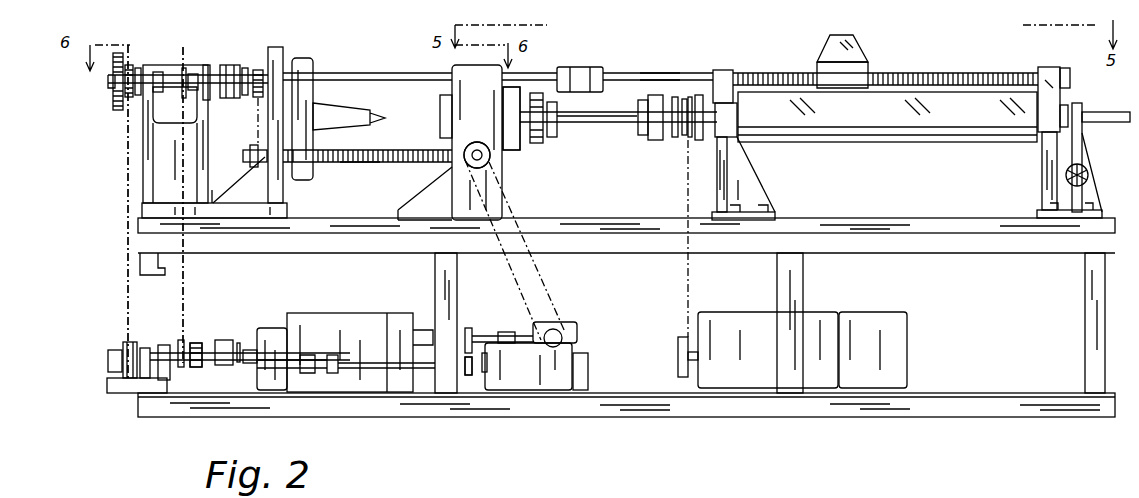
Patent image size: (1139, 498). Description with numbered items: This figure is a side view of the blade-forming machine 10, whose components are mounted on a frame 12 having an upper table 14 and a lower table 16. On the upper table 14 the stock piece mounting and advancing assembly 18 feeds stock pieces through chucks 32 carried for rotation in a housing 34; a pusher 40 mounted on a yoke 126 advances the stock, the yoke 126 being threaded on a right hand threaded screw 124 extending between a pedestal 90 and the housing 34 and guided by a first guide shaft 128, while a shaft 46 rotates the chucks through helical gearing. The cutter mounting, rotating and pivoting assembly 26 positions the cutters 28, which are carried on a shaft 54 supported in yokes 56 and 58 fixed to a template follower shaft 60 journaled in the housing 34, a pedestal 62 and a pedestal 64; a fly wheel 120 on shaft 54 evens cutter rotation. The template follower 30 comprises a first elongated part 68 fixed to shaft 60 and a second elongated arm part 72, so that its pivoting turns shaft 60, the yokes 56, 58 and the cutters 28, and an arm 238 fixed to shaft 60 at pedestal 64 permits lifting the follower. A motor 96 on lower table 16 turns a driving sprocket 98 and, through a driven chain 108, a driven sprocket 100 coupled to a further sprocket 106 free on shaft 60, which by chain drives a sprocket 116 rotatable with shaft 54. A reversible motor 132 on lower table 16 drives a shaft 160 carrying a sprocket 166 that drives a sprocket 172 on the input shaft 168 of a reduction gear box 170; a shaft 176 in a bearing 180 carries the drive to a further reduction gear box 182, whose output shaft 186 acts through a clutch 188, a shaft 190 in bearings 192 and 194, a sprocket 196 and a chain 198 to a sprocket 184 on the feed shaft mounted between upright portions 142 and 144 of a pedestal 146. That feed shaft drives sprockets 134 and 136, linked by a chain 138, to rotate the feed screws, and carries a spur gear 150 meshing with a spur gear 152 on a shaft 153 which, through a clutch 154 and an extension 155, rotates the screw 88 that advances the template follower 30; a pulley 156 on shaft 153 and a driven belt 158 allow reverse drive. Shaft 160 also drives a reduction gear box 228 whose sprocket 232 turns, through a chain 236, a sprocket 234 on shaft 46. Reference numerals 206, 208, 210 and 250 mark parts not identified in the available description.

The machine 10 is at (629, 65).
The frame 12 is at (435, 273).
The upper table 14 is at (922, 218).
The lower table 16 is at (638, 392).
The stock piece mounting and advancing assembly 18 is at (405, 147).
The cutter mounting, rotating and pivoting assembly 26 is at (552, 137).
The cutters 28 is at (535, 143).
The template follower 30 is at (818, 54).
The chucks 32 is at (515, 150).
The housing 34 is at (486, 97).
The pusher 40 is at (376, 112).
The shaft 46 is at (464, 158).
The shaft 54 is at (585, 122).
The yoke 56 is at (563, 67).
The yoke 58 is at (655, 95).
The template follower shaft 60 is at (1114, 124).
The pedestal 62 is at (752, 178).
The pedestal 64 is at (1042, 170).
The first elongated part 68 is at (870, 142).
The second elongated arm part 72 is at (868, 46).
The screw 88 is at (962, 73).
The pedestal 90 is at (276, 47).
The motor 96 is at (758, 357).
The driving sprocket 98 is at (678, 348).
The driven sprocket 100 is at (686, 140).
The sprocket 106 is at (684, 137).
The driven chain 108 is at (692, 290).
The sprocket 116 is at (674, 137).
The fly wheel 120 is at (720, 70).
The right hand threaded screw 124 is at (356, 162).
The yoke 126 is at (306, 58).
The first guide shaft 128 is at (400, 73).
The reversible motor 132 is at (340, 313).
The sprocket 134 is at (258, 97).
The sprocket 136 is at (252, 164).
The chain 138 is at (260, 125).
The upright portion 142 is at (143, 159).
The upright portion 144 is at (214, 200).
The pedestal 146 is at (142, 205).
The spur gear 150 is at (113, 101).
The spur gear 152 is at (121, 87).
The shaft 153 is at (160, 72).
The clutch 154 is at (218, 56).
The extension 155 is at (252, 54).
The pulley 156 is at (139, 68).
The driven belt 158 is at (120, 294).
The shaft 160 is at (470, 328).
The sprocket 166 is at (475, 357).
The input shaft 168 is at (487, 378).
The reduction gear box 170 is at (528, 366).
The sprocket 172 is at (468, 377).
The shaft 176 is at (362, 368).
The bearing 180 is at (340, 345).
The further reduction gear box 182 is at (272, 328).
The sprocket 184 is at (186, 68).
The output shaft 186 is at (250, 363).
The clutch 188 is at (238, 320).
The shaft 190 is at (210, 332).
The bearing 192 is at (197, 370).
The bearing 194 is at (160, 345).
The sprocket 196 is at (181, 340).
The chain 198 is at (184, 286).
The base 206 is at (140, 380).
The pulley 208 is at (123, 350).
The hub 210 is at (108, 367).
The reduction gear box 228 is at (568, 323).
The sprocket 232 is at (586, 351).
The sprocket 234 is at (480, 144).
The chain 236 is at (546, 287).
The arm 238 is at (1080, 103).
The handwheel 250 is at (1088, 177).